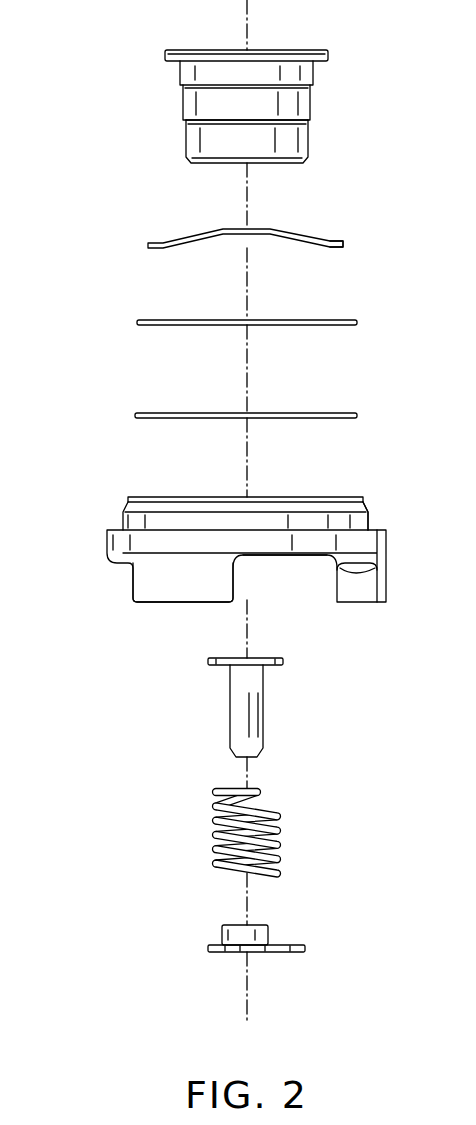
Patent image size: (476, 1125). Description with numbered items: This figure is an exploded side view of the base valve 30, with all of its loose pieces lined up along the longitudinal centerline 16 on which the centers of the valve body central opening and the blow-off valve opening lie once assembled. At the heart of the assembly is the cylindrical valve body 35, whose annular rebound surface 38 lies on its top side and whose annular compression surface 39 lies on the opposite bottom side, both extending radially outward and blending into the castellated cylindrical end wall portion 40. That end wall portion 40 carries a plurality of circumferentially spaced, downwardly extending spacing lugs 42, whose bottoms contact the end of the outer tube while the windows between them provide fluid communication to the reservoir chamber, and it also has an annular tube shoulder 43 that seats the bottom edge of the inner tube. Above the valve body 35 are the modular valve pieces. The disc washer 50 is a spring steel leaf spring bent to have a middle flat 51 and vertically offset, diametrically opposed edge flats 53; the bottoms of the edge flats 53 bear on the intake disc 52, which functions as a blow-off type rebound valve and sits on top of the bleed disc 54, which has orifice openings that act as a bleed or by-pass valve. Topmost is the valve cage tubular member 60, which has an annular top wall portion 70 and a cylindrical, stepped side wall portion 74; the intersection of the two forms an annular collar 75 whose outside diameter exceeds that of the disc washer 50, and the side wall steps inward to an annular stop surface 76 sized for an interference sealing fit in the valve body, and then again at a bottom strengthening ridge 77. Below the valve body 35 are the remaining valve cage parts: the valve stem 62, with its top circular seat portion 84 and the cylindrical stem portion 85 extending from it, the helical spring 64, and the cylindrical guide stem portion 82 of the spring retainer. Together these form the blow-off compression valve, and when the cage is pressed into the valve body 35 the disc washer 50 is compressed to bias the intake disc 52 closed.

The longitudinal centerline 16 is at (249, 997).
The base valve 30 is at (108, 449).
The valve body 35 is at (286, 546).
The rebound surface 38 is at (331, 497).
The compression surface 39 is at (295, 557).
The castellated end wall portion 40 is at (475, 562).
The spacing lugs 42 is at (168, 603).
The tube shoulder 43 is at (371, 530).
The disc washer 50 is at (279, 215).
The middle flat 51 is at (258, 230).
The intake disc 52 is at (352, 320).
The edge flats 53 is at (338, 243).
The bleed disc 54 is at (344, 413).
The tubular member 60 is at (245, 83).
The valve stem 62 is at (248, 707).
The helical spring 64 is at (278, 809).
The top wall portion 70 is at (302, 50).
The side wall portion 74 is at (312, 138).
The annular collar 75 is at (180, 62).
The annular stop surface 76 is at (180, 87).
The bottom strengthening ridge 77 is at (193, 131).
The guide stem portion 82 is at (257, 925).
The top circular seat portion 84 is at (208, 662).
The cylindrical stem portion 85 is at (230, 705).